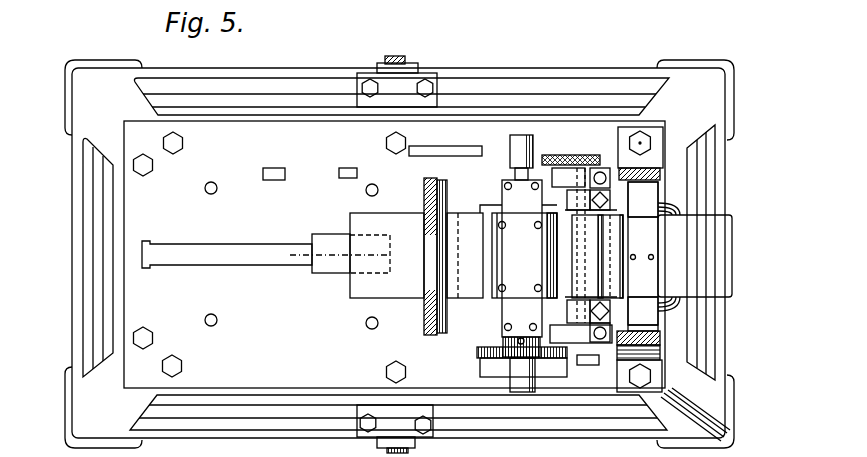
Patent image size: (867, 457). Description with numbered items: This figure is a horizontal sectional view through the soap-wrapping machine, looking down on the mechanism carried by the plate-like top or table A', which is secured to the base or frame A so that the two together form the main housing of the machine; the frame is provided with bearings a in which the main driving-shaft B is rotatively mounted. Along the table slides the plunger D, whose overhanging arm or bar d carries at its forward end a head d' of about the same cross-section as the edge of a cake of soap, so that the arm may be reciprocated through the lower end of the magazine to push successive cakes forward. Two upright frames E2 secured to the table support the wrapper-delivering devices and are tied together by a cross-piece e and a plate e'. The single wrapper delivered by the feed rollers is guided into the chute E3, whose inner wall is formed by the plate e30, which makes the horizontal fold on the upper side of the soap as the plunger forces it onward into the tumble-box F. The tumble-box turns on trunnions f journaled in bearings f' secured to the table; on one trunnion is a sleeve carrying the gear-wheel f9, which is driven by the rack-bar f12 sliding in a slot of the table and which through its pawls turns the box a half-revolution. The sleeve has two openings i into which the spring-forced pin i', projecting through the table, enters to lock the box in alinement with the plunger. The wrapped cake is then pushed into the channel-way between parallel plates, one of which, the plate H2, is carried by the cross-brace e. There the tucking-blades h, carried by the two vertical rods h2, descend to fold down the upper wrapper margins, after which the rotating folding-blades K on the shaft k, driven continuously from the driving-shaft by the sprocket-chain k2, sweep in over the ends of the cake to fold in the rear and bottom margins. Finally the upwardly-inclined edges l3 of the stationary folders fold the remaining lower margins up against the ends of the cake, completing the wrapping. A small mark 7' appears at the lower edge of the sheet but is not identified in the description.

The base or frame A is at (376, 254).
The top or table A' is at (394, 254).
The main driving-shaft B is at (400, 58).
The bearings a is at (417, 69).
The plunger D is at (331, 253).
The overhanging arm or bar d is at (387, 255).
The head d' is at (465, 255).
The plate e' is at (411, 252).
The plate e30 is at (447, 194).
The chute E3 is at (445, 312).
The tumble-box F is at (518, 258).
The trunnions f is at (508, 157).
The bearings f' is at (547, 139).
The openings i is at (519, 324).
The gear-wheel f9 is at (475, 352).
The rack-bar f12 is at (553, 368).
The sprocket-chain k2 is at (574, 172).
The shaft k is at (568, 245).
The tucking-blades h is at (605, 181).
The folding-blades K is at (597, 256).
The pin i' is at (614, 256).
The cross-piece e is at (643, 256).
The vertical rods h2 is at (643, 253).
The upright frames E2 is at (655, 170).
The plate H2 is at (735, 252).
The upwardly-inclined edges l3 is at (662, 212).
The unlabeled 7' is at (254, 450).